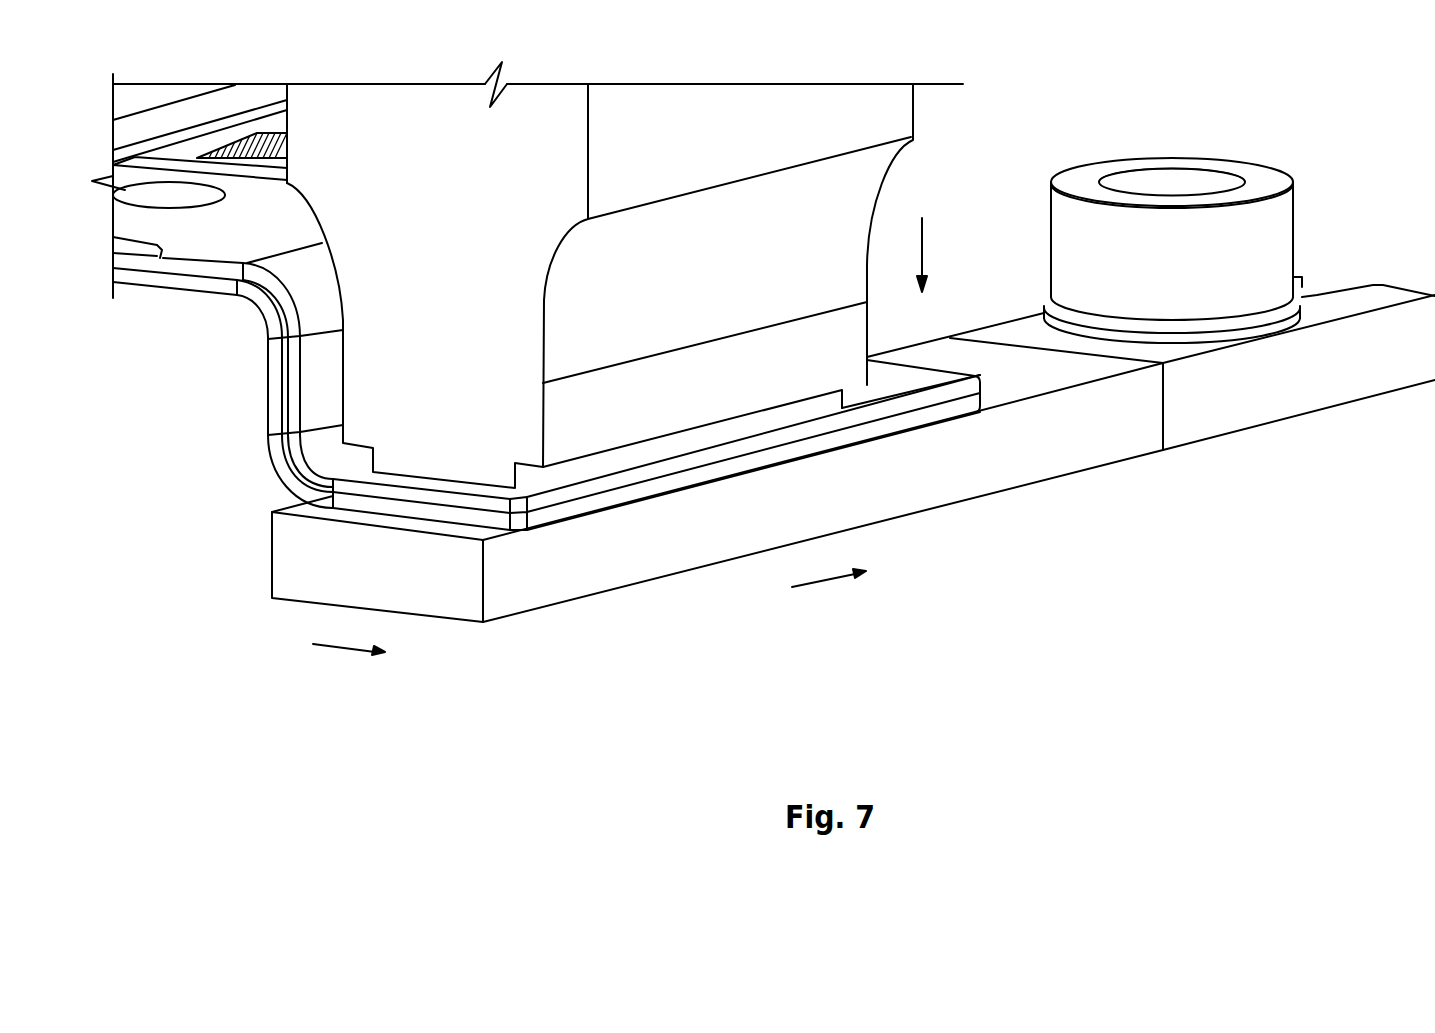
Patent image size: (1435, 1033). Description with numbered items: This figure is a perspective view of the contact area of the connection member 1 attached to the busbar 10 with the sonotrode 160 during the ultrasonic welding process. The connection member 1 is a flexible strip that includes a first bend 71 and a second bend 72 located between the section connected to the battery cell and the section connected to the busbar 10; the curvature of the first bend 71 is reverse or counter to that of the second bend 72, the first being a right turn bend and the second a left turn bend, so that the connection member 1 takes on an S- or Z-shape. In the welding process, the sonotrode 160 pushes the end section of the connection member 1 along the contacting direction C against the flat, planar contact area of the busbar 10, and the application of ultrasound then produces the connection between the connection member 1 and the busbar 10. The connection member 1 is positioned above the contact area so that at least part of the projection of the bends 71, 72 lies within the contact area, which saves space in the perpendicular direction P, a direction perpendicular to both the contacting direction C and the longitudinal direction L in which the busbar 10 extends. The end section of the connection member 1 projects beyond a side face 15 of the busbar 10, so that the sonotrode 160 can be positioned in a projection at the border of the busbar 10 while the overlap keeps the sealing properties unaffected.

The connection member 1 is at (546, 408).
The first bend 71 is at (241, 318).
The second bend 72 is at (236, 486).
The busbar 10 is at (853, 498).
The side face 15 is at (577, 607).
The sonotrode 160 is at (934, 137).
The perpendicular direction P is at (340, 648).
The longitudinal direction L is at (795, 587).
The contacting direction C is at (935, 236).